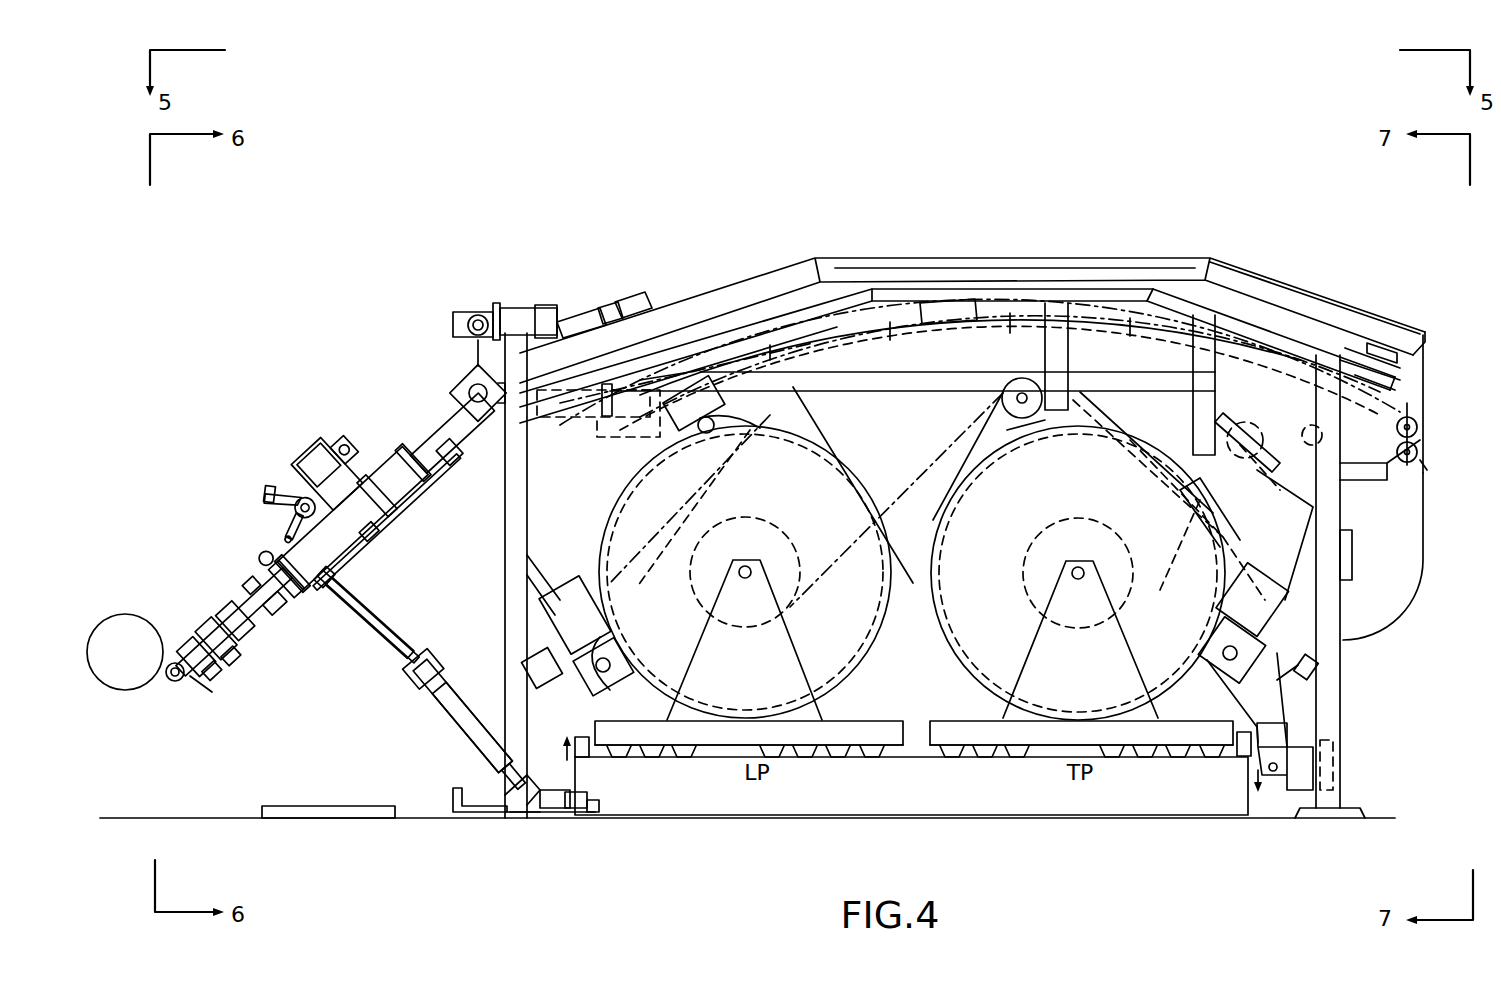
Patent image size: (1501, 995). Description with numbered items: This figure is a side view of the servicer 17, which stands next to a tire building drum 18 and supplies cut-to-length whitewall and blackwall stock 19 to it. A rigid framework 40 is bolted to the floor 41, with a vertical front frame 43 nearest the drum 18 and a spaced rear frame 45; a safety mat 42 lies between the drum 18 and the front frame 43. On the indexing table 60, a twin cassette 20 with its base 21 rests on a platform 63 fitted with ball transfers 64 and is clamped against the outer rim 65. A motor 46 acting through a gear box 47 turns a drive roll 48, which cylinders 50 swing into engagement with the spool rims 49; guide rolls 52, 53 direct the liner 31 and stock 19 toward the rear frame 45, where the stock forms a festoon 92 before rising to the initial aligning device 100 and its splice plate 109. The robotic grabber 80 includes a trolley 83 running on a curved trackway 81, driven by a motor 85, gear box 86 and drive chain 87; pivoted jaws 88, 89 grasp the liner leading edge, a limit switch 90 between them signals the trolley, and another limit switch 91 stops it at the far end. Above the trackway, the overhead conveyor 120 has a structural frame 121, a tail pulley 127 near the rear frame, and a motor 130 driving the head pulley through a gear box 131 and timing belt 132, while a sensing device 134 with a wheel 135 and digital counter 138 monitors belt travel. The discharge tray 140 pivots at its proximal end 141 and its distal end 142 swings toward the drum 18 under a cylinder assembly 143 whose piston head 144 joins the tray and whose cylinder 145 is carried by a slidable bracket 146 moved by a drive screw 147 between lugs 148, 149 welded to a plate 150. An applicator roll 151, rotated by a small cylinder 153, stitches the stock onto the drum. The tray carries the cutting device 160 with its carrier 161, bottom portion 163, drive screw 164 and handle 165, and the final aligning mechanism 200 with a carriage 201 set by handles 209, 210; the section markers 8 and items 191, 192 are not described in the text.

The section line 8 is at (911, 768).
The servicer 17 is at (865, 250).
The tire building drum 18 is at (95, 612).
The whitewall and blackwall stock 19 is at (1270, 515).
The twin cassette 20 is at (952, 670).
The base 21 is at (960, 735).
The liner 31 is at (958, 440).
The framework 40 is at (1350, 708).
The floor 41 is at (200, 818).
The mat 42 is at (345, 806).
The front frame 43 is at (505, 575).
The rear frame 45 is at (1343, 598).
The motor 46 is at (566, 590).
The gear box 47 is at (620, 656).
The drive roll 48 is at (610, 690).
The rims 49 is at (880, 645).
The pneumatic or hydraulic cylinders 50 is at (540, 680).
The guide roll 52 is at (1220, 425).
The guide roll 53 is at (1277, 467).
The indexing table 60 is at (1008, 800).
The platform 63 is at (712, 760).
The ball transfers 64 is at (628, 752).
The outer rim 65 is at (575, 742).
The robotic grabber 80 is at (680, 430).
The trackway 81 is at (938, 338).
The trolley 83 is at (680, 440).
The motor 85 is at (572, 418).
The gear box 86 is at (615, 385).
The drive chain 87 is at (932, 302).
The jaw 88 is at (780, 418).
The jaw 89 is at (720, 440).
The limit switch 90 is at (775, 435).
The limit switch 91 is at (1389, 432).
The loop or festoon 92 is at (1430, 580).
The initial aligning device 100 is at (1435, 455).
The splice plate 109 is at (1430, 432).
The overhead conveyor 120 is at (1040, 250).
The structural frame 121 is at (1130, 270).
The tail pulley 127 is at (1385, 330).
The motor 130 is at (522, 305).
The gear box 131 is at (473, 308).
The timing belt 132 is at (470, 370).
The sensing device 134 is at (615, 297).
The wheel 135 is at (565, 300).
The digital counter 138 is at (610, 290).
The discharge tray 140 is at (270, 540).
The proximal end 141 is at (458, 385).
The distal end 142 is at (205, 690).
The cylinder assembly 143 is at (412, 640).
The piston head 144 is at (392, 635).
The cylinder 145 is at (455, 722).
The slidable bracket 146 is at (585, 795).
The drive screw 147 is at (593, 835).
The lug 148 is at (510, 808).
The lug 149 is at (590, 808).
The plate 150 is at (530, 812).
The applicator roll 151 is at (175, 690).
The pneumatic or hydraulic cylinder 153 is at (240, 655).
The cutting device 160 is at (310, 430).
The carrier 161 is at (300, 480).
The bottom portion 163 is at (380, 520).
The drive screw 164 is at (443, 468).
The handle 165 is at (300, 590).
The sensor 191 is at (320, 450).
The lever 192 is at (265, 510).
The final aligning mechanism 200 is at (205, 605).
The carriage 201 is at (225, 595).
The handle 209 is at (235, 665).
The handle 210 is at (270, 615).